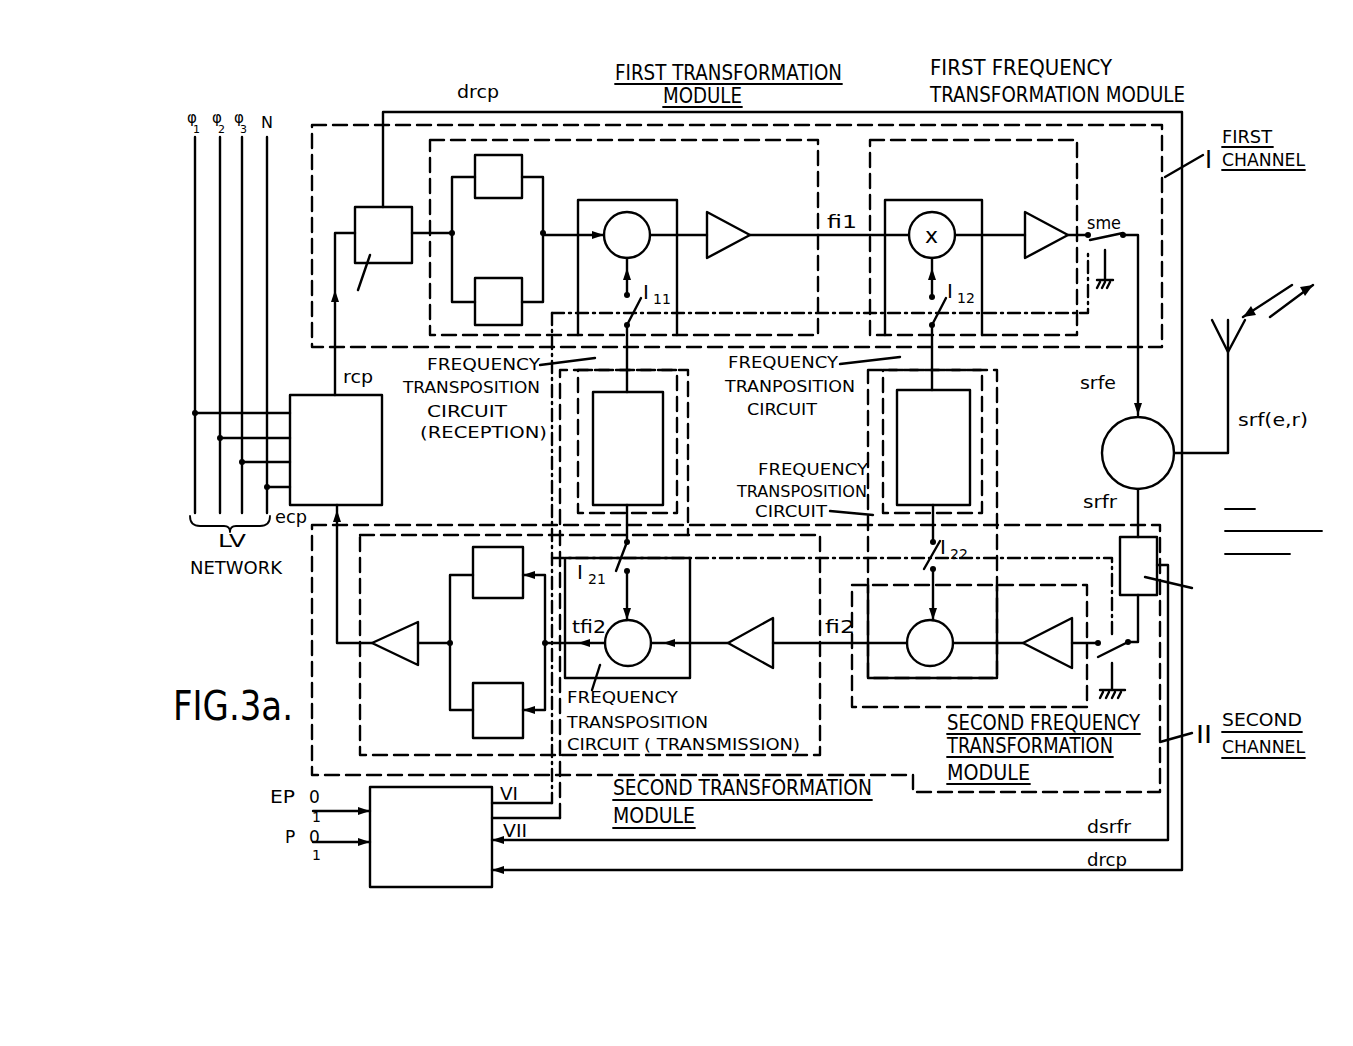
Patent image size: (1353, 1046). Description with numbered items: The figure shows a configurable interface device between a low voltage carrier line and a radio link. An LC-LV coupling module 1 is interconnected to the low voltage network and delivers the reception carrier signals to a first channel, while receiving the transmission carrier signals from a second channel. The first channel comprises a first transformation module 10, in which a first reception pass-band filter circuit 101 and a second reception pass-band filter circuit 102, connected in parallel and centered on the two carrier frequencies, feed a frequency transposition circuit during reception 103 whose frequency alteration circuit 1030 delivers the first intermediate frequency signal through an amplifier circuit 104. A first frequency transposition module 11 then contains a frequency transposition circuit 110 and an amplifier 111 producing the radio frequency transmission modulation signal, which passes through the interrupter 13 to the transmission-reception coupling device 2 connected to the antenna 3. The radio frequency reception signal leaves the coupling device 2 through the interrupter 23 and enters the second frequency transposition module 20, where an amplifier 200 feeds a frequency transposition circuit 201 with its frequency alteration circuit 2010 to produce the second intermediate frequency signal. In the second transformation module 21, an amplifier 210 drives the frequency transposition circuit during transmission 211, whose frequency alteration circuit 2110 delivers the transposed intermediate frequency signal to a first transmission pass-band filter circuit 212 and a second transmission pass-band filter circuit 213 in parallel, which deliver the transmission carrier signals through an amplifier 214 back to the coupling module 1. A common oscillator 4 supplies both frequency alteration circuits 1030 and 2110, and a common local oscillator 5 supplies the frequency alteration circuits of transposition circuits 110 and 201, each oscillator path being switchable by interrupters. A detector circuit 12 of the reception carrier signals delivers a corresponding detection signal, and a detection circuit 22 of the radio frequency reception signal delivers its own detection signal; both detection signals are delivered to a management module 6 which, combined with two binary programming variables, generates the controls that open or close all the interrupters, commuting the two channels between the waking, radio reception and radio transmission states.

The LC-LV coupling module 1 is at (382, 452).
The radio frequency transmission-reception coupling device 2 is at (1168, 480).
The transmission-reception antenna 3 is at (1233, 338).
The common oscillator 4 is at (663, 470).
The common local oscillator 5 is at (897, 440).
The management module 6 is at (370, 861).
The first transformation module 10 is at (560, 140).
The first frequency transposition module 11 is at (912, 140).
The detector circuit 12 is at (366, 207).
The interrupter I13 13 is at (1113, 260).
The second frequency transposition module 20 is at (936, 708).
The second transformation module 21 is at (607, 757).
The detection circuit 22 is at (1120, 546).
The interrupter I23 23 is at (1125, 668).
The first reception pass-band filter circuit 101 is at (509, 198).
The second reception pass-band filter circuit 102 is at (480, 278).
The frequency transposition circuit during reception 103 is at (627, 198).
The frequency alteration circuit 1030 is at (645, 218).
The amplifier circuit 104 is at (727, 213).
The frequency transposition circuit 110 is at (923, 200).
The amplifier 111 is at (1035, 218).
The amplifier 200 is at (1042, 630).
The frequency transposition circuit 201 is at (999, 675).
The frequency alteration circuit 2010 is at (955, 614).
The amplifier 210 is at (744, 656).
The frequency transposition circuit during transmission 211 is at (693, 591).
The first transmission pass-band filter circuit 212 is at (473, 565).
The second transmission pass-band filter circuit 213 is at (494, 683).
The amplifier 214 is at (400, 630).
The frequency alteration circuit 2110 is at (641, 622).